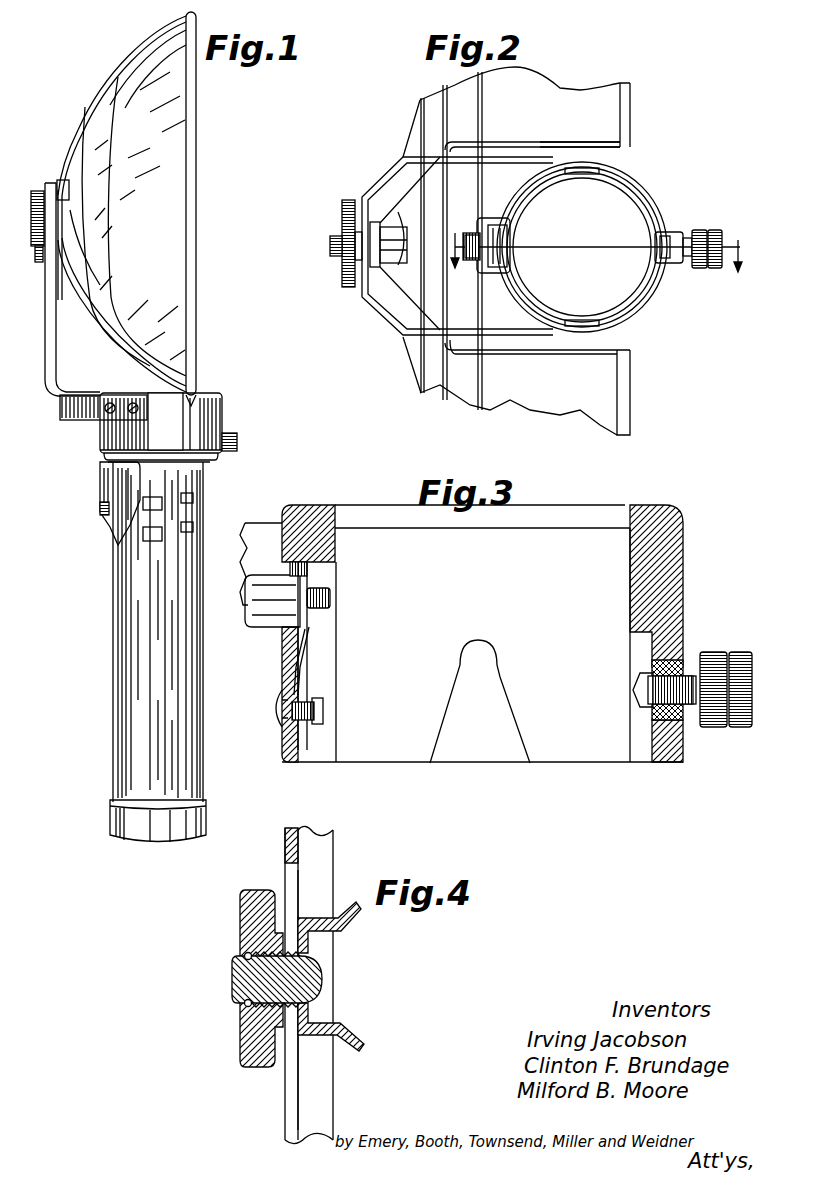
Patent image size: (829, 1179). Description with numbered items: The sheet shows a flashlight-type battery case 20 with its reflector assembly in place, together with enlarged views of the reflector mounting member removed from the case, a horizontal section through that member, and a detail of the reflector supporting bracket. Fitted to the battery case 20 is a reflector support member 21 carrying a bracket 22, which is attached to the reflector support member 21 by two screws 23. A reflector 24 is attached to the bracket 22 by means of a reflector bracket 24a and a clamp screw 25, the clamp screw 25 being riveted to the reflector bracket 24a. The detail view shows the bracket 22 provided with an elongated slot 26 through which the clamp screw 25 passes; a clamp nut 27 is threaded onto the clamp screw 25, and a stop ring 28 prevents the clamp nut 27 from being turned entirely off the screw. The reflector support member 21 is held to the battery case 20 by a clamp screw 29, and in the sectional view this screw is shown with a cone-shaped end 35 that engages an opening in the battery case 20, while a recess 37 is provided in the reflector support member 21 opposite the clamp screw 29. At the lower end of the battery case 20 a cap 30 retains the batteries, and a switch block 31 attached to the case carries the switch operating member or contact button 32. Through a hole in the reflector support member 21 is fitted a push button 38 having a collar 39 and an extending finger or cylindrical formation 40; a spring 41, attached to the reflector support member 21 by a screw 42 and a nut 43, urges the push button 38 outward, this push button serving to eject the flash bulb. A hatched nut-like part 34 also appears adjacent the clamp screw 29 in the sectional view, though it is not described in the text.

In FIG. 1, the battery case 20 is at (125, 658).
In FIG. 1, the reflector support member 21 is at (170, 427).
In FIG. 2, the reflector support member 21 is at (645, 213).
In FIG. 3, the reflector support member 21 is at (680, 554).
In FIG. 1, the bracket 22 is at (60, 361).
In FIG. 2, the bracket 22 is at (402, 310).
In FIG. 3, the bracket 22 is at (245, 523).
In FIG. 4, the bracket 22 is at (325, 852).
In FIG. 1, the screws 23 is at (133, 414).
In FIG. 1, the reflector 24 is at (176, 198).
In FIG. 2, the reflector 24 is at (610, 402).
In FIG. 1, the reflector bracket 24a is at (66, 176).
In FIG. 2, the reflector bracket 24a is at (382, 222).
In FIG. 4, the reflector bracket 24a is at (340, 926).
In FIG. 1, the clamp screw 25 is at (31, 212).
In FIG. 2, the clamp screw 25 is at (330, 247).
In FIG. 4, the clamp screw 25 is at (245, 977).
In FIG. 4, the elongated slot 26 is at (298, 900).
In FIG. 1, the clamp nut 27 is at (39, 250).
In FIG. 2, the clamp nut 27 is at (348, 287).
In FIG. 4, the clamp nut 27 is at (252, 906).
In FIG. 4, the stop ring 28 is at (245, 1005).
In FIG. 1, the clamp screw 29 is at (237, 442).
In FIG. 2, the clamp screw 29 is at (702, 240).
In FIG. 3, the clamp screw 29 is at (712, 654).
In FIG. 1, the cap 30 is at (115, 818).
In FIG. 1, the switch block 31 is at (118, 520).
In FIG. 1, the switch operating member or contact button 32 is at (100, 508).
In FIG. 3, the nut 34 is at (670, 714).
In FIG. 3, the cone-shaped end 35 is at (640, 688).
In FIG. 3, the recess 37 is at (322, 638).
In FIG. 2, the push button 38 is at (463, 245).
In FIG. 3, the push button 38 is at (280, 610).
In FIG. 3, the collar 39 is at (287, 576).
In FIG. 3, the extending finger or cylindrical formation 40 is at (330, 599).
In FIG. 3, the spring 41 is at (305, 672).
In FIG. 3, the screw 42 is at (280, 695).
In FIG. 3, the nut 43 is at (314, 706).